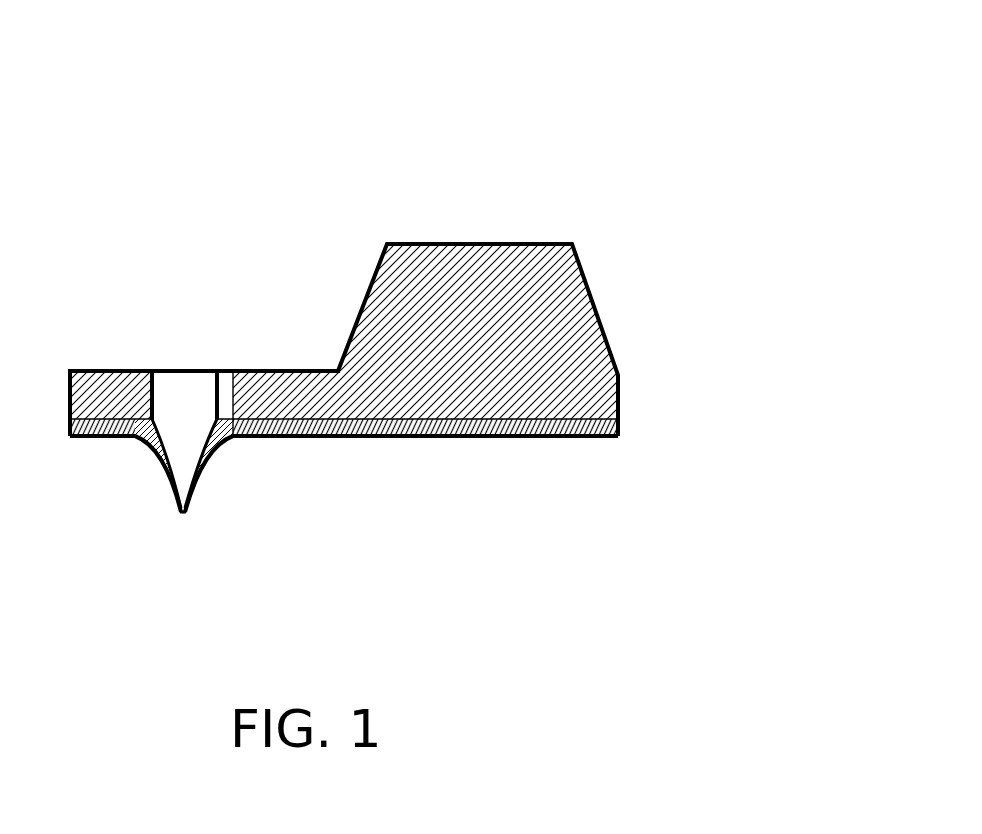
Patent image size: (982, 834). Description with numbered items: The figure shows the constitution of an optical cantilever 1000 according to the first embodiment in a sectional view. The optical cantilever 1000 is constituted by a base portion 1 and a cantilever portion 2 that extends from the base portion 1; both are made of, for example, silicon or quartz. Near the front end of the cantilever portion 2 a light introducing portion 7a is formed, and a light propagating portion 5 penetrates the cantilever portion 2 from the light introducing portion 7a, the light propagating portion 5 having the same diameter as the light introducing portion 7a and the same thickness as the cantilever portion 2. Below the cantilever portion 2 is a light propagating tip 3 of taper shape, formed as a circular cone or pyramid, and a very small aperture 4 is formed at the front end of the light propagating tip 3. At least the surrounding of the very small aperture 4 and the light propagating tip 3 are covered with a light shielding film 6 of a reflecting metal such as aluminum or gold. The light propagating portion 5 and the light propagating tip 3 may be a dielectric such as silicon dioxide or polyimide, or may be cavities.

The optical cantilever 1000 is at (601, 117).
The base portion 1 is at (568, 295).
The light introducing portion 7a is at (180, 371).
The cantilever portion 2 is at (340, 357).
The light propagating portion 5 is at (242, 395).
The light shielding film 6 is at (498, 435).
The light propagating tip 3 is at (233, 437).
The very small aperture 4 is at (185, 515).